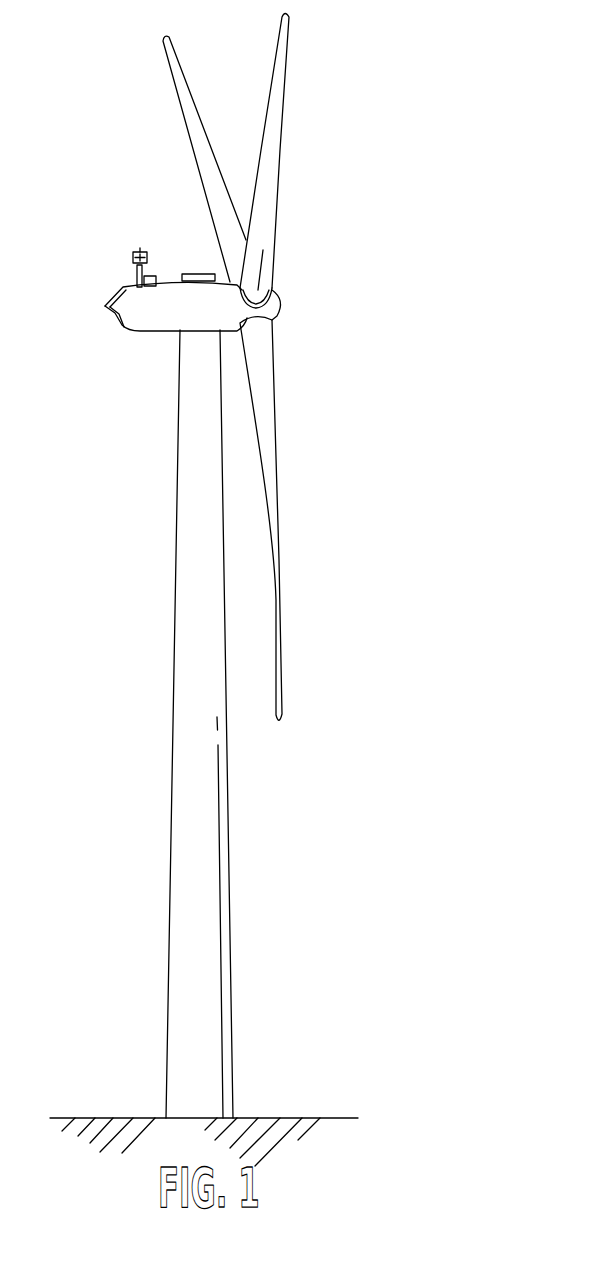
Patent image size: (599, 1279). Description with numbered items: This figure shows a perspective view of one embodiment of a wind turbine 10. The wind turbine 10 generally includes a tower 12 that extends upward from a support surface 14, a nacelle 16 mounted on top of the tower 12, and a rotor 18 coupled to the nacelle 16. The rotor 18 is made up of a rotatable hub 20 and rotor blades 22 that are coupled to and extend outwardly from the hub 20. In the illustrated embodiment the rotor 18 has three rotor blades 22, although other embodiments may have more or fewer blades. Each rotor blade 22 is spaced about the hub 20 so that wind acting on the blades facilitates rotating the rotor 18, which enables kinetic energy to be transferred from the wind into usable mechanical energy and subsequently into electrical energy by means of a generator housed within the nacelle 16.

The wind turbine 10 is at (405, 93).
The tower 12 is at (206, 820).
The support surface 14 is at (123, 1118).
The nacelle 16 is at (146, 331).
The rotor 18 is at (290, 284).
The rotatable hub 20 is at (278, 314).
The rotor blade 22 is at (282, 132).